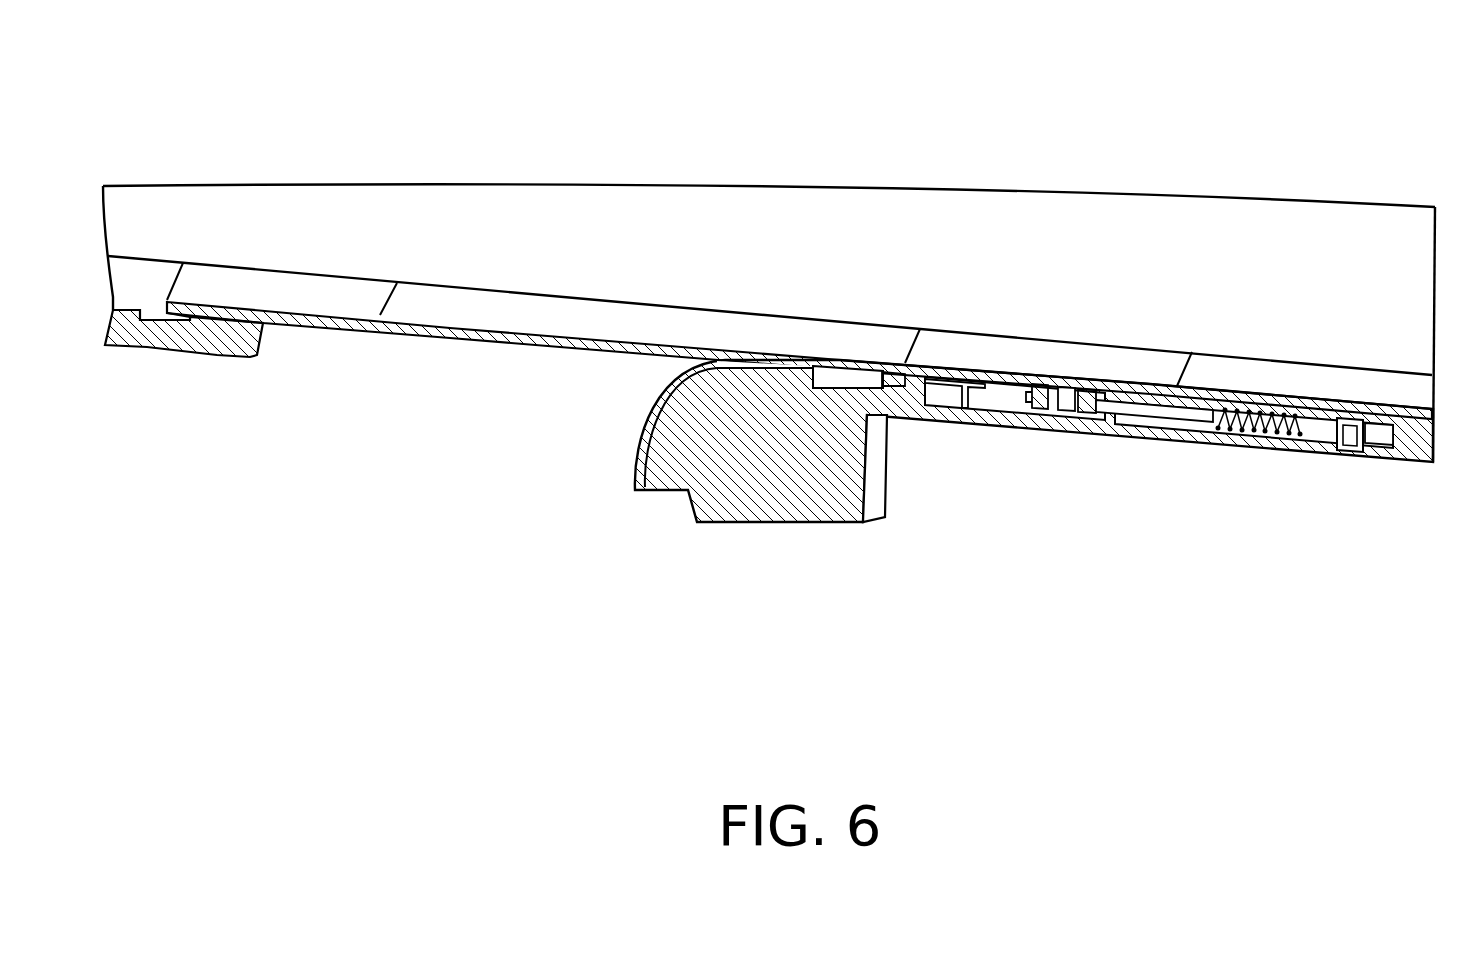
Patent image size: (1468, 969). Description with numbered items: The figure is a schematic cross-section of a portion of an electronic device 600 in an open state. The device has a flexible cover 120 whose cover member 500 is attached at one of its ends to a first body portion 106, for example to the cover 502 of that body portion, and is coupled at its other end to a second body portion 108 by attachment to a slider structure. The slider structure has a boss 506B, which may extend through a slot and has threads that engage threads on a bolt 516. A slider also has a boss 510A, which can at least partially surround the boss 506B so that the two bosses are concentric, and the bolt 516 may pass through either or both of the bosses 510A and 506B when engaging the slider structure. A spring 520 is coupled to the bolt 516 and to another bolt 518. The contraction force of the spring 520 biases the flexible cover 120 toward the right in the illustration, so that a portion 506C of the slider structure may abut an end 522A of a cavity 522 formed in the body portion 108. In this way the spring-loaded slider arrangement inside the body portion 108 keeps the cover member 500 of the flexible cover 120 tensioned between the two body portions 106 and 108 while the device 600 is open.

The flexible cover 120 is at (550, 142).
The electronic device 600 is at (388, 529).
The cover member 500 is at (337, 331).
The cover 502 is at (133, 277).
The body portion 106 is at (215, 357).
The portion of the slider structure 506C is at (908, 376).
The body portion 108 is at (893, 413).
The end of the cavity 522A is at (940, 400).
The cavity 522 is at (1003, 405).
The boss 506B is at (1045, 400).
The bolt 516 is at (1073, 402).
The boss 510A is at (1107, 402).
The spring 520 is at (1247, 434).
The bolt 518 is at (1345, 428).